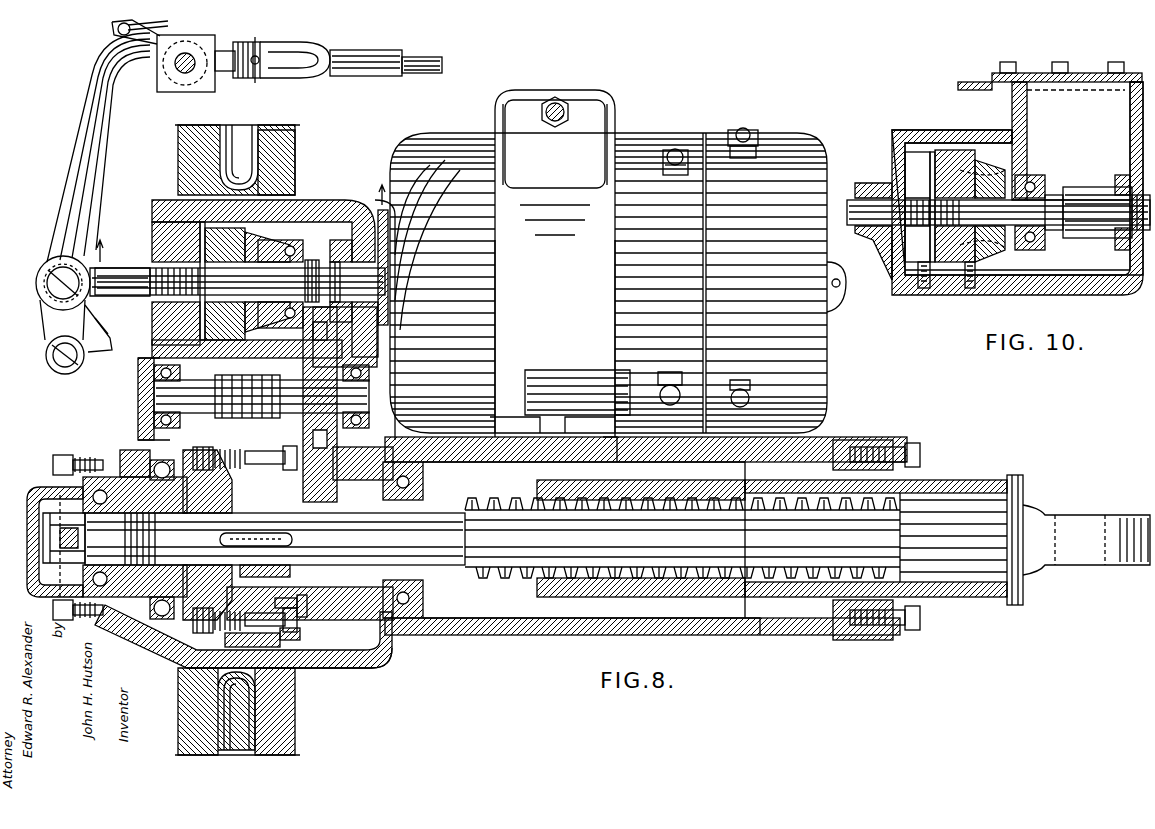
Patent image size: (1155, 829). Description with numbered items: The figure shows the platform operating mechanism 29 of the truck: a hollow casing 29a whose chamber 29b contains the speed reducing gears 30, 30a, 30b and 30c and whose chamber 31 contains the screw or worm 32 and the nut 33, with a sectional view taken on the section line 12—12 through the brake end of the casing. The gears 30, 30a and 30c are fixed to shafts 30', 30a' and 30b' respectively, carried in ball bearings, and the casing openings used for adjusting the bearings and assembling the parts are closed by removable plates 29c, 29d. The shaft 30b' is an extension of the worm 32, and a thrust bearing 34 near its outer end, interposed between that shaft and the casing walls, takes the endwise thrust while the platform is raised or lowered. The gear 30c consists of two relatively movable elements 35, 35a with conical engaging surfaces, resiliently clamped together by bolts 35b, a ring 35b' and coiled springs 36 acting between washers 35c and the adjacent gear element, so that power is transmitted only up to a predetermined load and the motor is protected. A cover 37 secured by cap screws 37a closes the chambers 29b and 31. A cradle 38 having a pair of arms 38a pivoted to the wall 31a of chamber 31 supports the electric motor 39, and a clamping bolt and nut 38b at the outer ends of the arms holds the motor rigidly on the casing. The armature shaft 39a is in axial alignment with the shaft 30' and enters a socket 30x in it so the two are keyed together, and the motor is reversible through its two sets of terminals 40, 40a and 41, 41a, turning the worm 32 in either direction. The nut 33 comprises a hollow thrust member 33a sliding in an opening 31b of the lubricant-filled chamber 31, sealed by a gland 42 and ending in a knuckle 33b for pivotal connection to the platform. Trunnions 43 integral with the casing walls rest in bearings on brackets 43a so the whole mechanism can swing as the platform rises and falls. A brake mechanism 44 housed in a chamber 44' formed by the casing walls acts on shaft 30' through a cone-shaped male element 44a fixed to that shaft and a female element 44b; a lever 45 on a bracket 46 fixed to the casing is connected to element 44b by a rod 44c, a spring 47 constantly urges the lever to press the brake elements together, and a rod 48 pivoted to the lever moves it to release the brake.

In FIG. 8, the section line 12 is at (242, 252).
In FIG. 8, the platform moving mechanism 29 is at (372, 160).
In FIG. 8, the hollow casing 29a is at (378, 668).
In FIG. 10, the hollow casing 29a is at (1055, 295).
In FIG. 8, the gear chamber 29b is at (238, 557).
In FIG. 10, the gear chamber 29b is at (1042, 120).
In FIG. 8, the removable plate 29c is at (138, 405).
In FIG. 8, the removable plate 29d is at (42, 490).
In FIG. 8, the speed reducing gear 30 is at (240, 263).
In FIG. 10, the speed reducing gear 30 is at (998, 198).
In FIG. 8, the shaft 30' is at (284, 273).
In FIG. 10, the shaft 30' is at (1060, 233).
In FIG. 8, the socket 30x is at (342, 258).
In FIG. 10, the socket 30x is at (1118, 240).
In FIG. 8, the speed reducing gear 30a is at (340, 404).
In FIG. 8, the shaft 30a' is at (260, 382).
In FIG. 8, the speed reducing gear 30b is at (261, 384).
In FIG. 8, the shaft 30b' is at (301, 583).
In FIG. 8, the speed reducing gear 30c is at (280, 644).
In FIG. 8, the worm chamber 31 is at (496, 536).
In FIG. 8, the chamber wall 31a is at (612, 462).
In FIG. 8, the opening 31b is at (756, 636).
In FIG. 8, the screw or worm 32 is at (490, 498).
In FIG. 8, the nut 33 is at (562, 480).
In FIG. 8, the hollow thrust member 33a is at (960, 598).
In FIG. 8, the knuckle 33b is at (1080, 567).
In FIG. 8, the thrust bearing 34 is at (185, 620).
In FIG. 8, the gear element 35 is at (230, 651).
In FIG. 8, the gear element 35a is at (285, 606).
In FIG. 8, the clamping bolt 35b is at (318, 611).
In FIG. 8, the ring 35b' is at (310, 638).
In FIG. 8, the washer 35c is at (218, 447).
In FIG. 8, the coiled spring 36 is at (222, 468).
In FIG. 10, the cover 37 is at (1090, 72).
In FIG. 10, the cap screw 37a is at (1058, 62).
In FIG. 8, the cradle 38 is at (607, 275).
In FIG. 8, the cradle arm 38a is at (503, 296).
In FIG. 8, the clamping bolt and nut 38b is at (557, 100).
In FIG. 8, the electric motor 39 is at (793, 287).
In FIG. 8, the armature shaft 39a is at (392, 284).
In FIG. 10, the armature shaft 39a is at (1138, 200).
In FIG. 8, the terminal 40 is at (676, 150).
In FIG. 8, the terminal 40a is at (746, 128).
In FIG. 8, the terminal 41 is at (670, 372).
In FIG. 8, the terminal 41a is at (745, 380).
In FIG. 8, the gland 42 is at (838, 640).
In FIG. 8, the trunnion 43 is at (262, 130).
In FIG. 8, the bracket 43a is at (292, 162).
In FIG. 8, the brake mechanism 44 is at (250, 276).
In FIG. 10, the brake mechanism 44 is at (917, 207).
In FIG. 8, the brake chamber 44' is at (162, 254).
In FIG. 10, the brake chamber 44' is at (920, 180).
In FIG. 8, the male brake element 44a is at (218, 235).
In FIG. 10, the male brake element 44a is at (990, 160).
In FIG. 8, the female brake element 44b is at (215, 240).
In FIG. 10, the female brake element 44b is at (955, 150).
In FIG. 8, the rod 44c is at (98, 290).
In FIG. 10, the rod 44c is at (870, 183).
In FIG. 8, the lever 45 is at (72, 172).
In FIG. 8, the bracket 46 is at (100, 345).
In FIG. 10, the bracket 46 is at (885, 250).
In FIG. 8, the spring 47 is at (168, 22).
In FIG. 8, the rod 48 is at (372, 77).